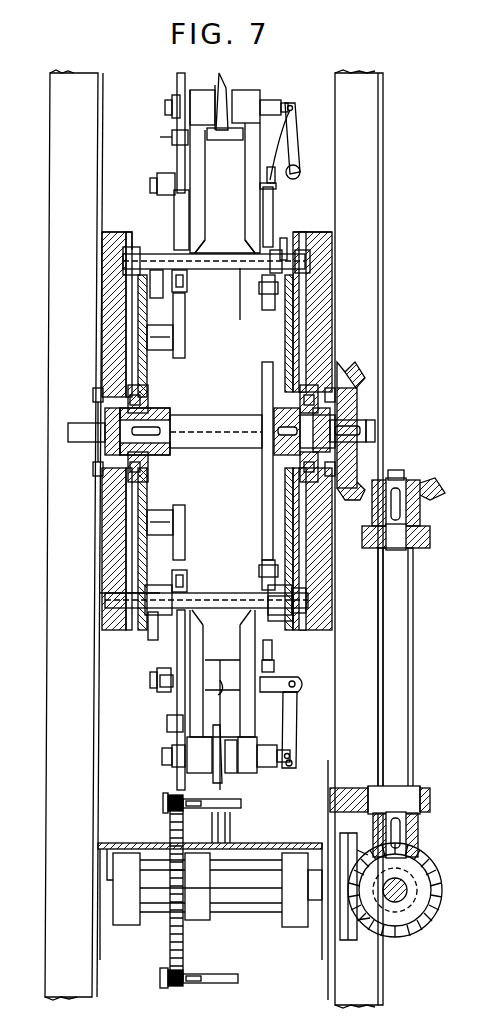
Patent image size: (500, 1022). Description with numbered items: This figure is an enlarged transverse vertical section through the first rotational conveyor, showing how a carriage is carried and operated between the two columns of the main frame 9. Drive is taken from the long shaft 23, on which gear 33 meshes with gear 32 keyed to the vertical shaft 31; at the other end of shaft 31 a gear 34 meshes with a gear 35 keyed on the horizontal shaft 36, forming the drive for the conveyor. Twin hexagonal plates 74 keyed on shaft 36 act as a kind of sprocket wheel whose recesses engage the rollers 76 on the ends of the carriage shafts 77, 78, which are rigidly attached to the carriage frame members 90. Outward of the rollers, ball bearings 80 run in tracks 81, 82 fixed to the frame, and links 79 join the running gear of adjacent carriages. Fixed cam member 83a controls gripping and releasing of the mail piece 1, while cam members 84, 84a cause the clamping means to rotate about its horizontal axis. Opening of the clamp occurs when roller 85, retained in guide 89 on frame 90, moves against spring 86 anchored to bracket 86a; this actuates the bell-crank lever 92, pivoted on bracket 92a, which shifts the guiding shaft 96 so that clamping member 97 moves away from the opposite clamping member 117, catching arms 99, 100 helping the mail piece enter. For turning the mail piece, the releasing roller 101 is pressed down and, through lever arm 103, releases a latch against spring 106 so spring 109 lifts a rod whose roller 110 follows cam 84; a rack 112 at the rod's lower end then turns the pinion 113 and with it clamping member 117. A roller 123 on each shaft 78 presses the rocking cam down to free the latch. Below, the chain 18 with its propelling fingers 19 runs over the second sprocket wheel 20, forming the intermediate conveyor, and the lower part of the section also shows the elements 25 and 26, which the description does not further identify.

The mail piece 1 is at (220, 685).
The main frame 9 is at (48, 805).
The chain 18 is at (183, 975).
The fingers 19 is at (241, 803).
The second sprocket wheel 20 is at (183, 932).
The shaft 23 is at (400, 902).
The bracket 25 is at (357, 935).
The drive shaft 26 is at (264, 898).
The vertical shaft 31 is at (413, 605).
The gear 32 is at (430, 857).
The gear 33 is at (430, 915).
The gear 34 is at (430, 486).
The gear 35 is at (362, 362).
The horizontal shaft 36 is at (212, 425).
The hexagonal plates 74 is at (283, 340).
The rollers 76 is at (148, 254).
The shaft 77 is at (240, 268).
The shaft 78 is at (234, 596).
The links 79 is at (285, 245).
The ball bearings 80 is at (130, 245).
The track 81 is at (118, 242).
The track 82 is at (306, 240).
The fixed cam member 83a is at (262, 470).
The fixed cam member 84 is at (185, 520).
The fixed cam member 84a is at (185, 335).
The roller 85 is at (268, 310).
The spring 86 is at (273, 188).
The bracket 86a is at (262, 243).
The guide 89 is at (272, 660).
The carriage frame member 90 is at (250, 200).
The bell-crank lever 92 is at (296, 135).
The bracket 92a is at (287, 103).
The guiding shaft 96 is at (286, 762).
The clamping member 97 is at (228, 90).
The catching arm 99 is at (262, 773).
The catching arm 100 is at (203, 92).
The releasing roller 101 is at (150, 185).
The lever arm 103 is at (160, 683).
The spring 106 is at (172, 150).
The spring 109 is at (167, 720).
The roller 110 is at (188, 283).
The rack 112 is at (177, 75).
The pinion 113 is at (165, 106).
The clamping member 117 is at (222, 138).
The roller or ball bearing 123 is at (156, 278).